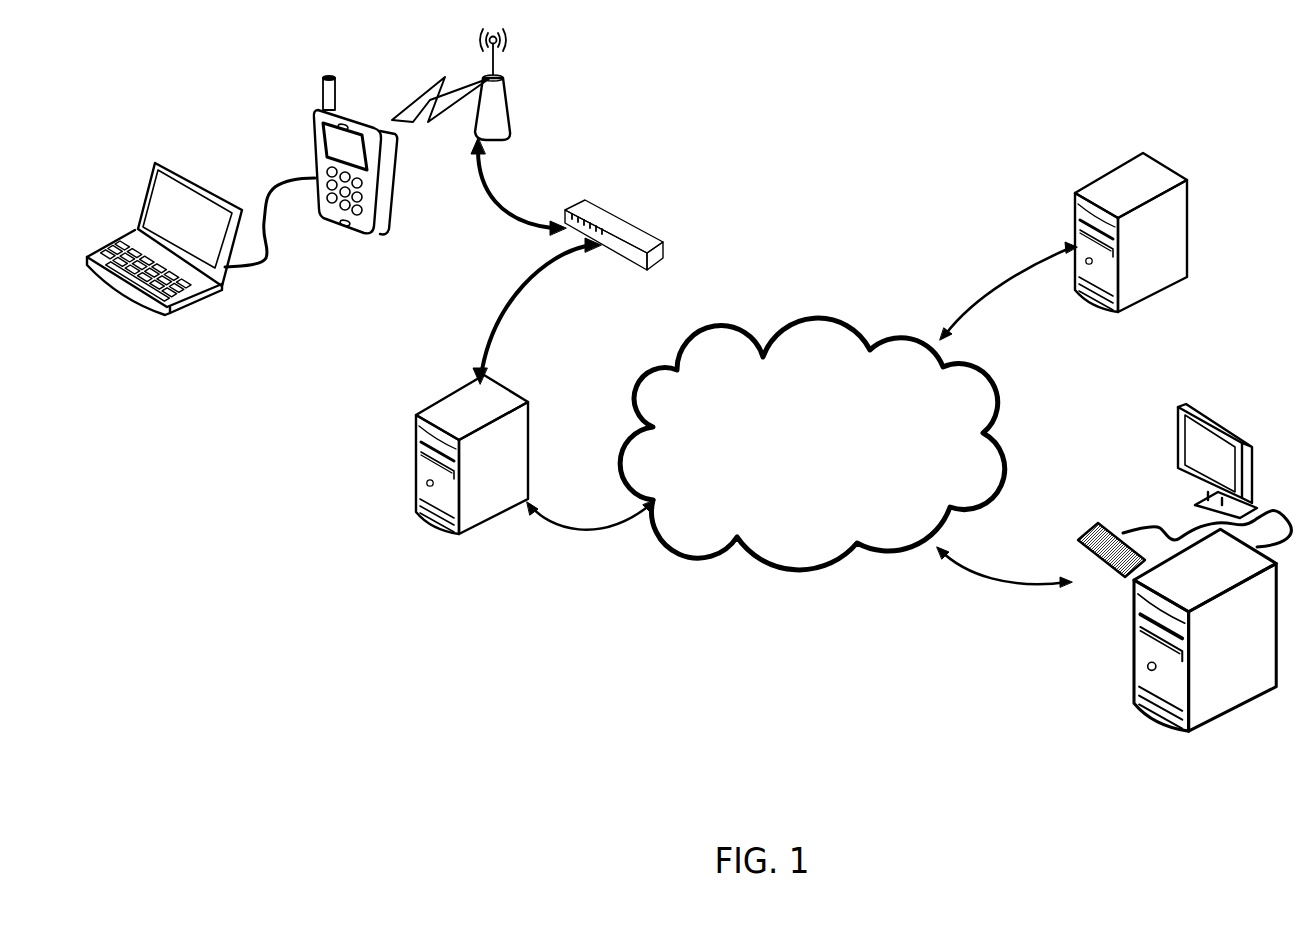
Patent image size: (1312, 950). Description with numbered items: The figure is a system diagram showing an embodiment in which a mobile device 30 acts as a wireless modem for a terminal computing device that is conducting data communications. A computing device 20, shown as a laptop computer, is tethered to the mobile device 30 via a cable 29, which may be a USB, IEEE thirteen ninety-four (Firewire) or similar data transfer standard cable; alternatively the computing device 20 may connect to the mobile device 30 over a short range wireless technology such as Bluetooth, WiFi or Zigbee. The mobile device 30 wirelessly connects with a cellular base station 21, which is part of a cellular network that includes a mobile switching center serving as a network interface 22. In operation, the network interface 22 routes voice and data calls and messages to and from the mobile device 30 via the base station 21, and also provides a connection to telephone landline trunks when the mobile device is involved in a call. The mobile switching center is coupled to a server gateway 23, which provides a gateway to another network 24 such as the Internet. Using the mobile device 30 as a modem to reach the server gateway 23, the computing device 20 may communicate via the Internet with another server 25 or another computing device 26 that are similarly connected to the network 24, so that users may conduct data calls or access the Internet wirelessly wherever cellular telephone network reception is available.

The computing device 20 is at (197, 182).
The cellular base station 21 is at (510, 103).
The network interface 22 is at (623, 207).
The server gateway 23 is at (535, 412).
The network 24 is at (815, 316).
The server 25 is at (1183, 180).
The computing device 26 is at (1228, 425).
The cable 29 is at (300, 262).
The mobile device 30 is at (337, 72).